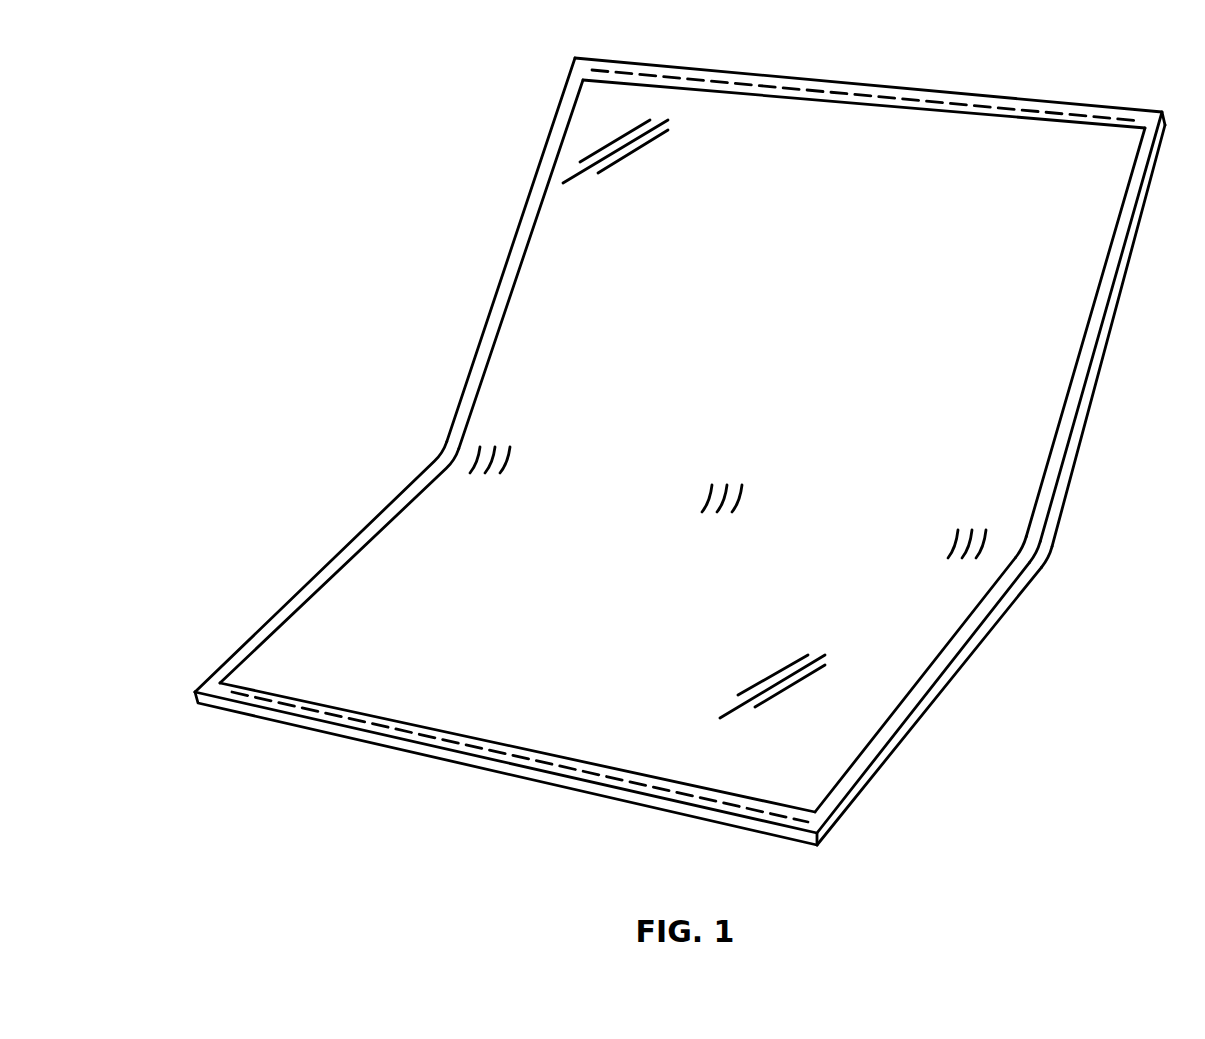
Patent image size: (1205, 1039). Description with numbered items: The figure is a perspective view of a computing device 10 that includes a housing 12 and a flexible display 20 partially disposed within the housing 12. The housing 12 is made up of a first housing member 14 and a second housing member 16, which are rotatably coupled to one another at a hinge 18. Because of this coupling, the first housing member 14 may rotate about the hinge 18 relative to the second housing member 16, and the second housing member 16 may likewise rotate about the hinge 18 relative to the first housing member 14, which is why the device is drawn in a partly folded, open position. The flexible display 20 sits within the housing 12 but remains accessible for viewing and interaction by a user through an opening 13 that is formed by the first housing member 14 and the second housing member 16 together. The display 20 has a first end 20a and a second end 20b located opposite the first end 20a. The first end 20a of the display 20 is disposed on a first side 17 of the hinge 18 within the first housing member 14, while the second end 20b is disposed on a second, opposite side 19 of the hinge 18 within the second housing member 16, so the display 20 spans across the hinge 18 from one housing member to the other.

The computing device 10 is at (364, 136).
The housing 12 is at (461, 345).
The opening 13 is at (372, 516).
The first housing member 14 is at (1050, 97).
The second housing member 16 is at (905, 730).
The first side 17 is at (1052, 614).
The hinge 18 is at (1066, 563).
The second side 19 is at (1091, 509).
The flexible display 20 is at (1072, 308).
The first end 20a is at (439, 761).
The second end 20b is at (830, 71).